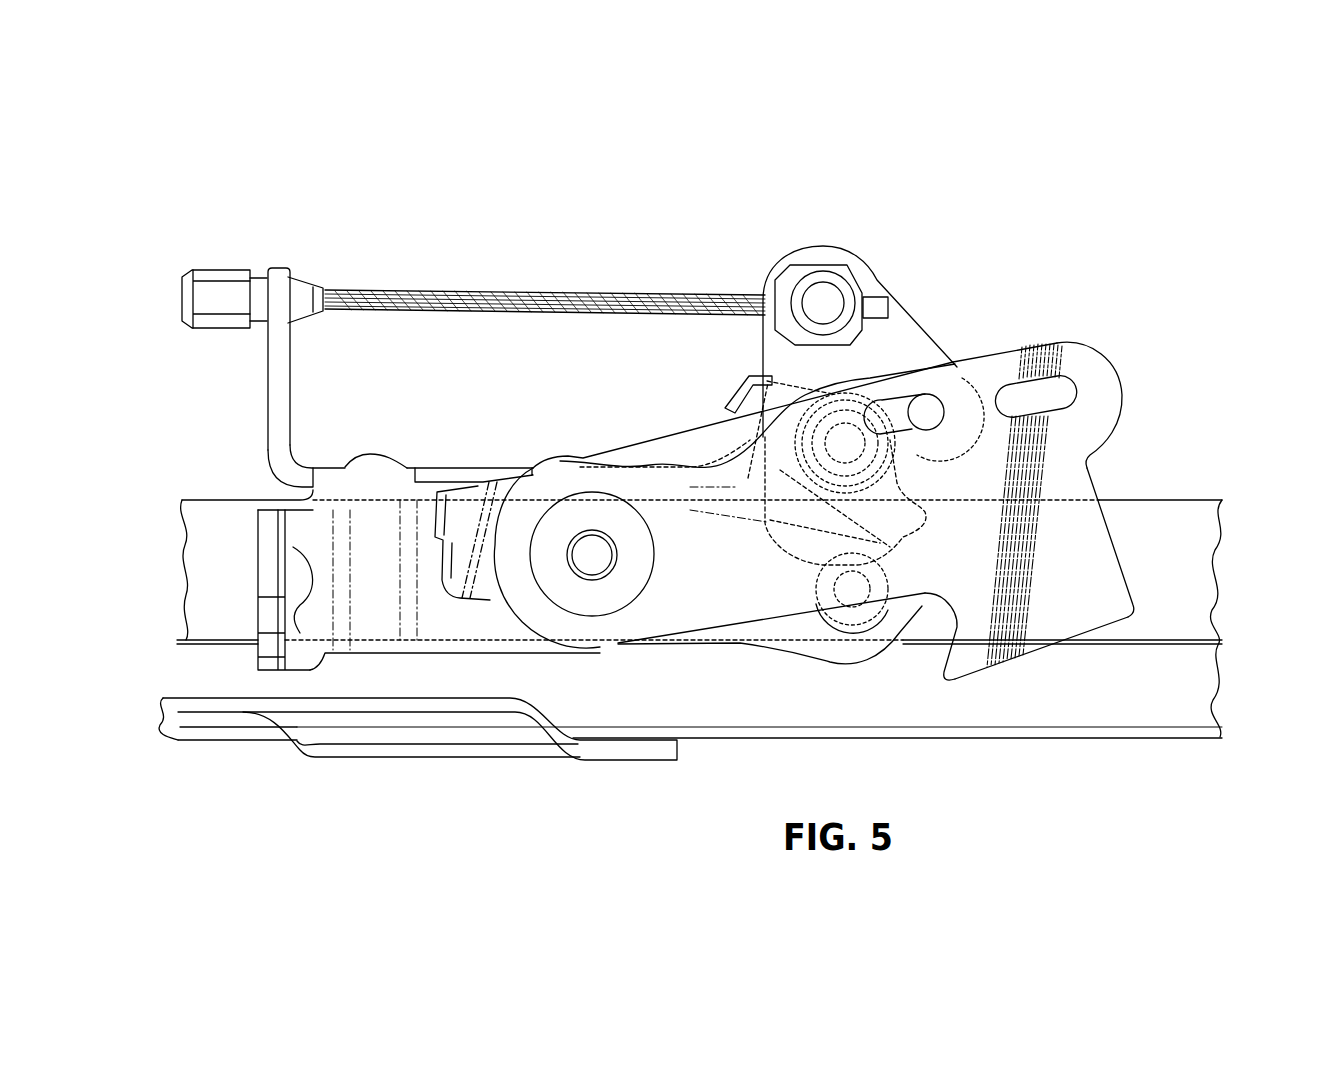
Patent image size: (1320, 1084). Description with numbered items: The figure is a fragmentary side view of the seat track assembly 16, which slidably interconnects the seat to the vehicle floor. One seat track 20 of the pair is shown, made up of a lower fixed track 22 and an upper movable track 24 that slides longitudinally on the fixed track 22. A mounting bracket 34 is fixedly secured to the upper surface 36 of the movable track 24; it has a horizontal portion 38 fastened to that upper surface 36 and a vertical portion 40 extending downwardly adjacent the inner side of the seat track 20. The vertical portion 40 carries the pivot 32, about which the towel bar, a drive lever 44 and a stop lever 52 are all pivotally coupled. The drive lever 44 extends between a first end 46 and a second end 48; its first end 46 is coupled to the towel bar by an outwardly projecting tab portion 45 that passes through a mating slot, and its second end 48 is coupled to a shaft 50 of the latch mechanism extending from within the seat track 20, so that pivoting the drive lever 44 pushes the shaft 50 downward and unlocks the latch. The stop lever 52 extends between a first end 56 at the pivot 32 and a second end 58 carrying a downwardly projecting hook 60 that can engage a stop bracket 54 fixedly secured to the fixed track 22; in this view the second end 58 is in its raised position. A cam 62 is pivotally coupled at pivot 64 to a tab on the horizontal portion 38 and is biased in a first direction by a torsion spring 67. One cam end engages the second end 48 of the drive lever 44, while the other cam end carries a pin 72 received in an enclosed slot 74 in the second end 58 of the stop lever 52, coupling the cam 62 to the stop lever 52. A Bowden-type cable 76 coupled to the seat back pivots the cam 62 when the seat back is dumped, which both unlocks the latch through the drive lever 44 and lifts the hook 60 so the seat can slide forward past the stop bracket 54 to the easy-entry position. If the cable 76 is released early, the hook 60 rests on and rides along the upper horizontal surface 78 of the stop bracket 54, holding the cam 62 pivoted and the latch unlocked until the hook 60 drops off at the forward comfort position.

The seat track assembly 16 is at (1083, 247).
The seat track 20 is at (185, 560).
The lower fixed track 22 is at (1128, 722).
The upper movable track 24 is at (1153, 517).
The pivot 32 is at (596, 546).
The mounting bracket 34 is at (278, 398).
The upper surface 36 is at (208, 497).
The horizontal portion 38 is at (372, 452).
The vertical portion 40 is at (380, 628).
The drive lever 44 is at (505, 605).
The tab portion 45 is at (414, 505).
The first end 46 is at (470, 480).
The second end 48 is at (823, 650).
The shaft 50 is at (860, 605).
The stop lever 52 is at (1107, 422).
The stop bracket 54 is at (413, 705).
The first end 56 is at (577, 478).
The second end 58 is at (1098, 377).
The hook 60 is at (1000, 665).
The cam 62 is at (812, 255).
The pivot 64 is at (850, 422).
The torsion spring 67 is at (718, 438).
The pin 72 is at (931, 410).
The enclosed slot 74 is at (905, 434).
The Bowden-type cable 76 is at (345, 292).
The upper horizontal surface 78 is at (200, 698).